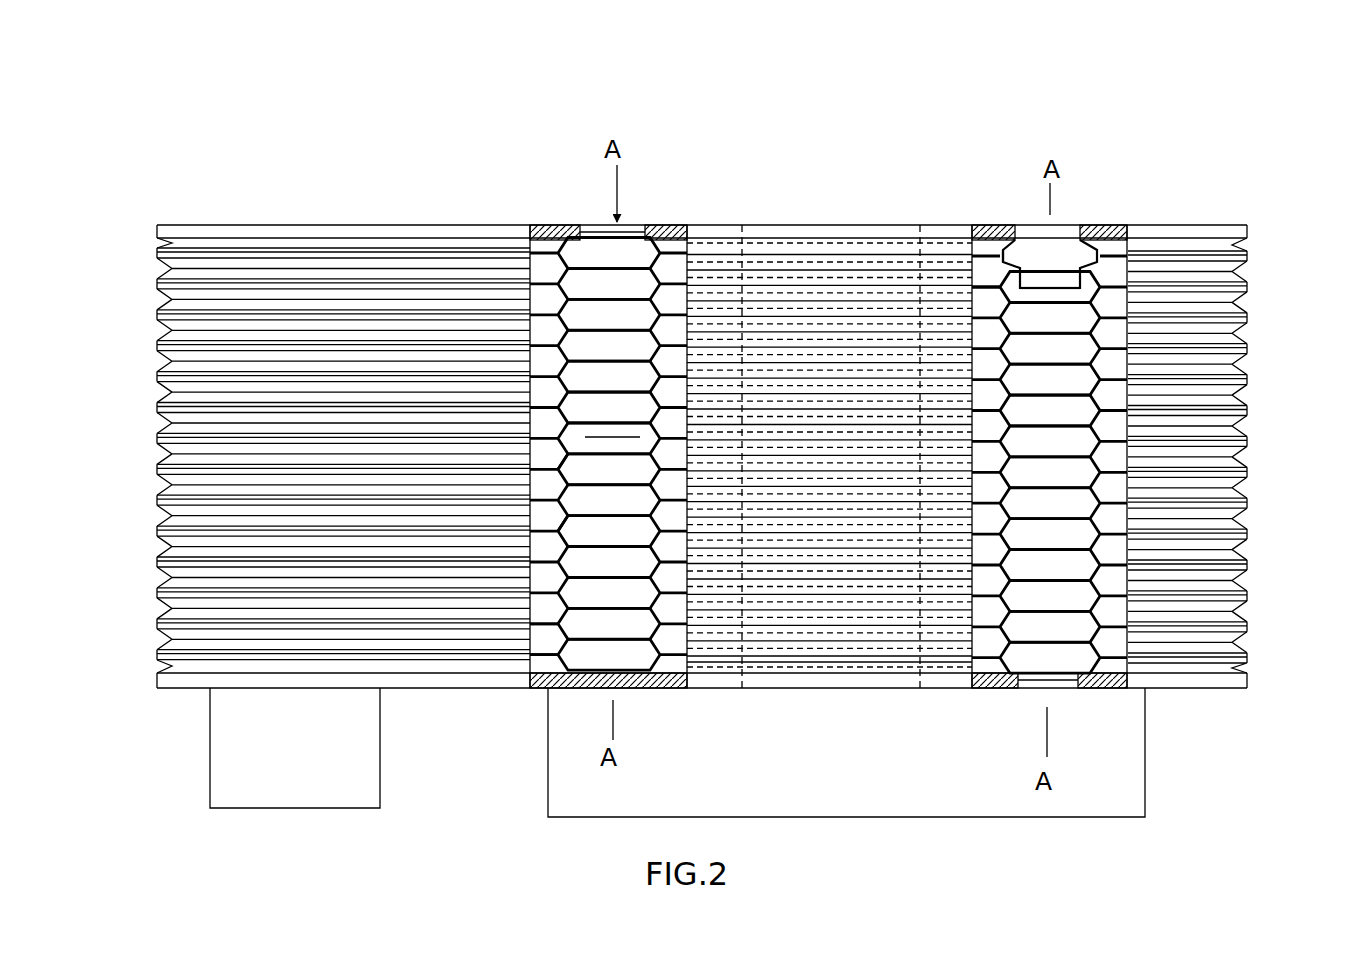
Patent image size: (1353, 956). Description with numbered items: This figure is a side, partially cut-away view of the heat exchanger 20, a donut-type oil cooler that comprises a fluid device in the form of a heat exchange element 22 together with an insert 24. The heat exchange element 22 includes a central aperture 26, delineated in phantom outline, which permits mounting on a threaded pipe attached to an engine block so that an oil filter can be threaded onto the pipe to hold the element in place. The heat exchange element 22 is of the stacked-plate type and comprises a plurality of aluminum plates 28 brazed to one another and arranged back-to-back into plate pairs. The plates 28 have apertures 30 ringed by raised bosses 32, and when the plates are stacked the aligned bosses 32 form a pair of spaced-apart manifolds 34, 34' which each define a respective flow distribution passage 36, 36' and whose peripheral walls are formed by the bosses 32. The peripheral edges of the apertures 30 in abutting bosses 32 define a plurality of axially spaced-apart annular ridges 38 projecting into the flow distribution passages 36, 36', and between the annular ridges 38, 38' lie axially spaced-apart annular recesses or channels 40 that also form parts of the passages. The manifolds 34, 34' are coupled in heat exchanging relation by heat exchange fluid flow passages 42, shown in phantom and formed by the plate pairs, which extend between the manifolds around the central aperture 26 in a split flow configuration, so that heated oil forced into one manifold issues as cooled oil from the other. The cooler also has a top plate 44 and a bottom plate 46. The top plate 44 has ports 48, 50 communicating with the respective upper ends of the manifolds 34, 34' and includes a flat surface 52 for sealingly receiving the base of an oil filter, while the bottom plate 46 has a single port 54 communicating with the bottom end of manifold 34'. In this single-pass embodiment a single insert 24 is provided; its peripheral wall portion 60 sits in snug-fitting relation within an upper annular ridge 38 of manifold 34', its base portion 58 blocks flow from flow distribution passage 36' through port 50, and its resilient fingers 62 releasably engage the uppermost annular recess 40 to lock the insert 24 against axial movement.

The heat exchanger 20 is at (368, 156).
The heat exchange element 22 is at (1300, 380).
The insert 24 is at (1108, 242).
The central aperture 26 is at (748, 295).
The plates 28 is at (157, 270).
The apertures 30 is at (585, 528).
The raised bosses 32 is at (548, 640).
The manifold 34 is at (622, 714).
The manifold 34' is at (1049, 711).
The flow distribution passage 36 is at (612, 438).
The flow distribution passage 36' is at (1049, 464).
The annular ridges 38 is at (921, 510).
The cell wall flat 38' is at (657, 526).
The annular recesses 40 is at (598, 520).
The heat exchange fluid flow passages 42 is at (852, 640).
The top plate 44 is at (1248, 232).
The bottom plate 46 is at (1248, 688).
The port 48 is at (626, 232).
The port 50 is at (1070, 228).
The flat surface 52 is at (238, 225).
The port 54 is at (1030, 690).
The base portion 58 is at (1036, 287).
The peripheral wall portion 60 is at (1043, 287).
The resilient fingers 62 is at (1005, 262).